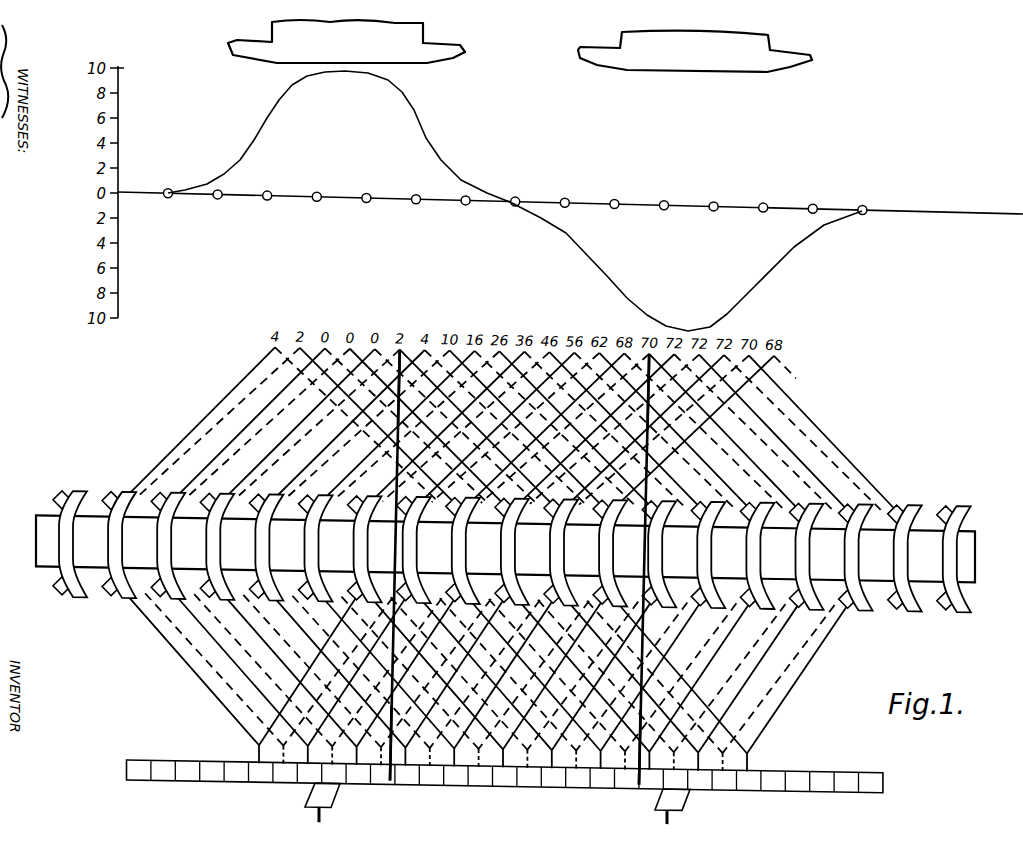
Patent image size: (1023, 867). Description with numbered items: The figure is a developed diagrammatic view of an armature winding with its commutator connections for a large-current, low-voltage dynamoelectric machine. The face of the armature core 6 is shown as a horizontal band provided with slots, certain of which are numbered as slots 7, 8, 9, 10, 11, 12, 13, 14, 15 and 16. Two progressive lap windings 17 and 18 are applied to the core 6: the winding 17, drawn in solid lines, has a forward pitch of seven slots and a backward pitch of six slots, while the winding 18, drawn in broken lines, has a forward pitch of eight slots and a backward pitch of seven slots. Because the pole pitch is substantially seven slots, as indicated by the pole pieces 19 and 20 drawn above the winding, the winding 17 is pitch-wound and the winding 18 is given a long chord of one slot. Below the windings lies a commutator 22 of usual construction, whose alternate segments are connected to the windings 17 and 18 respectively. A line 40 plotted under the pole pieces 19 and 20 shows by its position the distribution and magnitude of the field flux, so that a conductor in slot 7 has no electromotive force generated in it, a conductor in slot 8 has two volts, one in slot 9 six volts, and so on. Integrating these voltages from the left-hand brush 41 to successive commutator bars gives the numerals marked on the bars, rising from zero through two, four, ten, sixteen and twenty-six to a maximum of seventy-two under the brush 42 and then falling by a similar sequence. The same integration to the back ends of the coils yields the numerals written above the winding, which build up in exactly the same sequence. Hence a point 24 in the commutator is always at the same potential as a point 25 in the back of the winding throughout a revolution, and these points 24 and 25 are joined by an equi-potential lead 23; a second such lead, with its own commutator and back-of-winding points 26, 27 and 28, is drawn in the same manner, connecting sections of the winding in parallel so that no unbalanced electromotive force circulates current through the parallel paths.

The armature core 6 is at (37, 541).
The slot 7 is at (164, 546).
The slot 8 is at (213, 546).
The slot 9 is at (262, 546).
The slot 10 is at (311, 546).
The slot 11 is at (360, 546).
The slot 12 is at (409, 546).
The slot 13 is at (458, 546).
The slot 14 is at (507, 546).
The slot 15 is at (557, 546).
The slot 16 is at (606, 546).
The winding 17 is at (239, 382).
The winding 18 is at (236, 411).
The pole piece 19 is at (430, 62).
The pole piece 20 is at (600, 67).
The commutator 22 is at (798, 780).
The equi-potential lead 23 is at (393, 616).
The point in the commutator 24 is at (390, 775).
The point in the back of the armature winding 25 is at (401, 342).
The vertical connection 26 is at (645, 626).
The lower connector 27 is at (631, 780).
The upper connector 28 is at (650, 342).
The line 40 is at (433, 148).
The brush 41 is at (316, 793).
The brush 42 is at (683, 792).